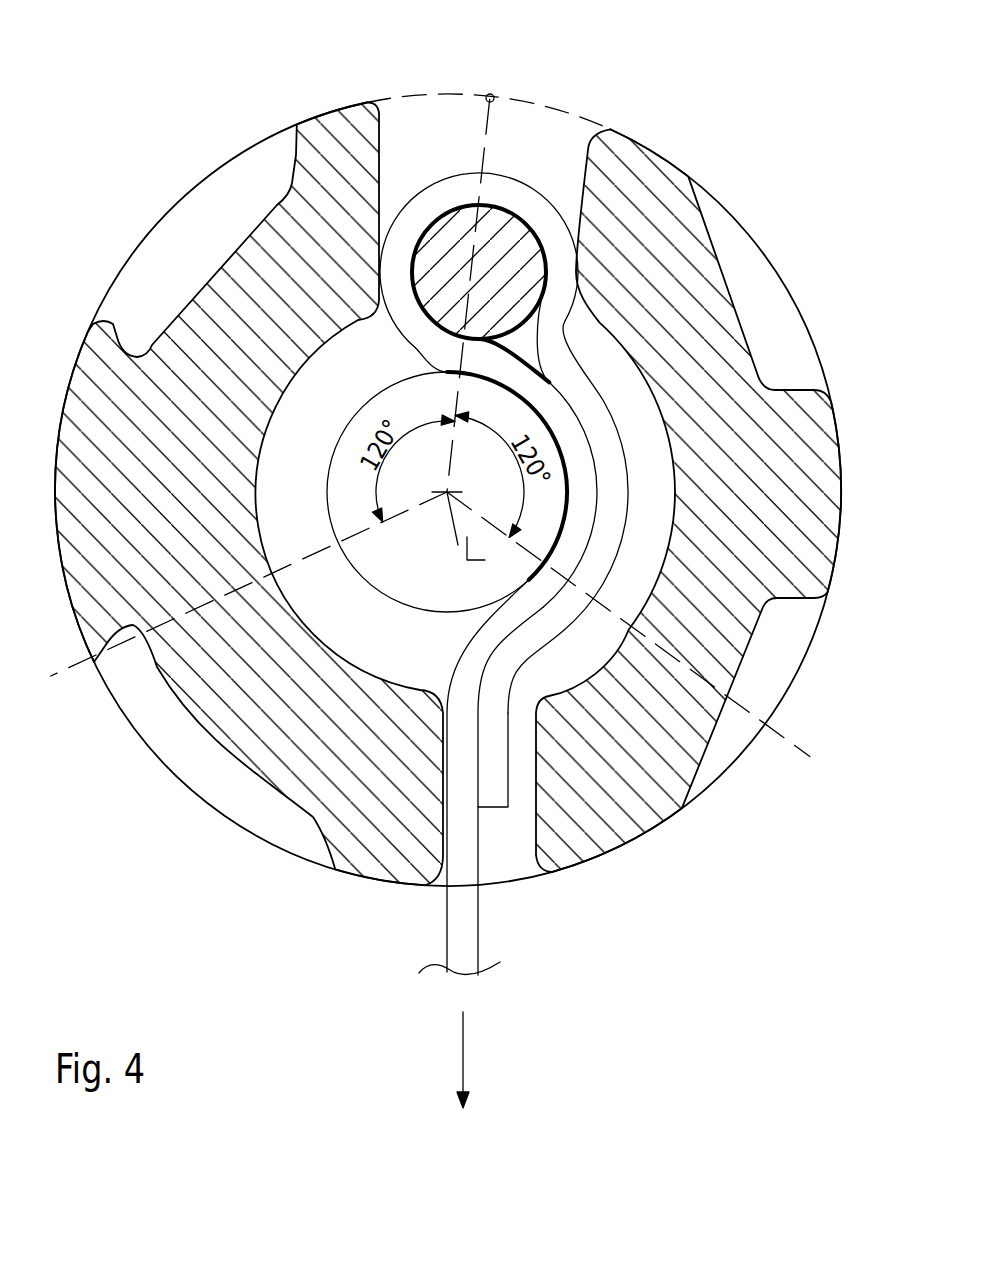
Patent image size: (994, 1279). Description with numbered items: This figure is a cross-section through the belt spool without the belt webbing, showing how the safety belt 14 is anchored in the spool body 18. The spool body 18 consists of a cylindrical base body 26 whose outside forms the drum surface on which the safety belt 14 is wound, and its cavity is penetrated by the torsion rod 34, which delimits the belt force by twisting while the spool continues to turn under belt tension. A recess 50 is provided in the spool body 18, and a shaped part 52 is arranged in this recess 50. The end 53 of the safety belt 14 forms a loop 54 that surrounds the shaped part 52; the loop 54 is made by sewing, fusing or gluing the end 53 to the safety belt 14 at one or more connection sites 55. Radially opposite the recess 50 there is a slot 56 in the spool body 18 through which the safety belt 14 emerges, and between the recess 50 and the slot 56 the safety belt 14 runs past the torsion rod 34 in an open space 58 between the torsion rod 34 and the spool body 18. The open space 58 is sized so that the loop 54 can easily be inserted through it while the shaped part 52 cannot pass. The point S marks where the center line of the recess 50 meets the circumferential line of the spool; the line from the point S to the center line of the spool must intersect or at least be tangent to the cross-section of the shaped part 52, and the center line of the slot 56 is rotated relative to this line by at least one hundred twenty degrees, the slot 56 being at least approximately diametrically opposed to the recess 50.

The safety belt 14 is at (460, 922).
The spool body 18 is at (128, 757).
The cylindrical base body 26 is at (273, 730).
The torsion rod 34 is at (405, 569).
The recess 50 is at (430, 127).
The shaped part 52 is at (515, 242).
The end 53 is at (493, 790).
The loop 54 is at (507, 173).
The connection site 55 is at (598, 481).
The slot 56 is at (527, 852).
The open space 58 is at (593, 637).
The point S is at (491, 62).